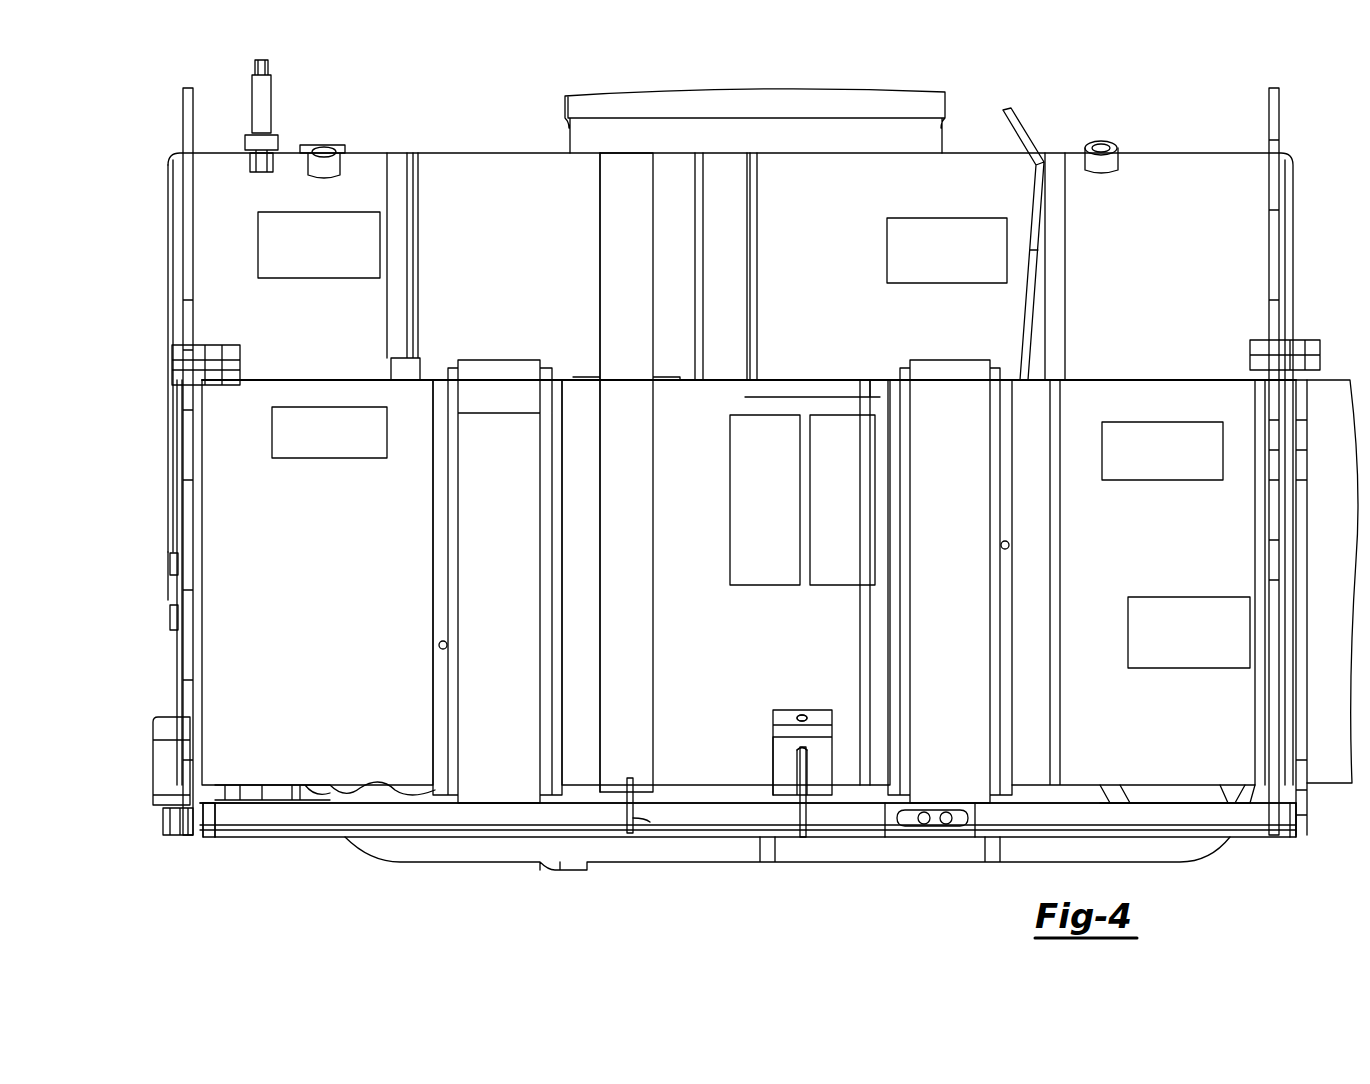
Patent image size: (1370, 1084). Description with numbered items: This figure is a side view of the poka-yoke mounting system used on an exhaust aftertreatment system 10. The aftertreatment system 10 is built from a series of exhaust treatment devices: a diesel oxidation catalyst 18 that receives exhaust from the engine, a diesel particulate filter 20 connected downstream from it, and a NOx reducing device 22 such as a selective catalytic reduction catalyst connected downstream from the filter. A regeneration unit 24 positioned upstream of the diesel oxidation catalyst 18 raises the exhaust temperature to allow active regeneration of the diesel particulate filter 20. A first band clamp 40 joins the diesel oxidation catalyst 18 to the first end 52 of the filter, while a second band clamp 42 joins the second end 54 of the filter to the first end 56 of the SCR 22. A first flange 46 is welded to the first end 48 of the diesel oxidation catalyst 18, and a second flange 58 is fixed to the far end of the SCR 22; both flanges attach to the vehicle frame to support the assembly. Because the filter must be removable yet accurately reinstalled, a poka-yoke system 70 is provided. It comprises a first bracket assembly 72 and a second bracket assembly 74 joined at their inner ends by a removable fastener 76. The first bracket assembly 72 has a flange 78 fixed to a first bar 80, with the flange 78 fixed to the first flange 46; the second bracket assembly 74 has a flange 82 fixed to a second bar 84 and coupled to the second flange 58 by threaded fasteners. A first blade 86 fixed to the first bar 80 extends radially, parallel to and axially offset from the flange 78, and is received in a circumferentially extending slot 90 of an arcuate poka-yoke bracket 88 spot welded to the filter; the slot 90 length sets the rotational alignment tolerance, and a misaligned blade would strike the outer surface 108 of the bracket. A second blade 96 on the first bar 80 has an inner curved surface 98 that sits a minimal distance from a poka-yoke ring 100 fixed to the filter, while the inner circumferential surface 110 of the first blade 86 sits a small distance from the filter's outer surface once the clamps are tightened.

The aftertreatment system 10 is at (158, 497).
The diesel oxidation catalyst 18 is at (322, 388).
The diesel particulate filter 20 is at (714, 398).
The NOx reducing device 22 is at (1200, 388).
The regeneration unit 24 is at (468, 862).
The first band clamp 40 is at (503, 370).
The second band clamp 42 is at (957, 373).
The first flange 46 is at (188, 713).
The first end of DOC 48 is at (178, 652).
The first end of DPF 52 is at (622, 372).
The second end of DPF 54 is at (888, 447).
The first end of SCR 56 is at (1042, 383).
The second flange 58 is at (1308, 522).
The poka-yoke system 70 is at (690, 800).
The first bracket assembly 72 is at (278, 840).
The second bracket assembly 74 is at (1195, 800).
The removable fastener 76 is at (940, 805).
The flange 78 is at (215, 820).
The first bar 80 is at (313, 812).
The flange 82 is at (1300, 838).
The second bar 84 is at (1158, 813).
The first blade 86 is at (806, 820).
The poka-yoke bracket 88 is at (785, 775).
The slot 90 is at (803, 716).
The second blade 96 is at (650, 822).
The inner curved surface 98 is at (631, 778).
The poka-yoke ring 100 is at (640, 652).
The outer surface of poka-yoke bracket 108 is at (822, 752).
The inner circumferential surface of first blade 110 is at (797, 752).